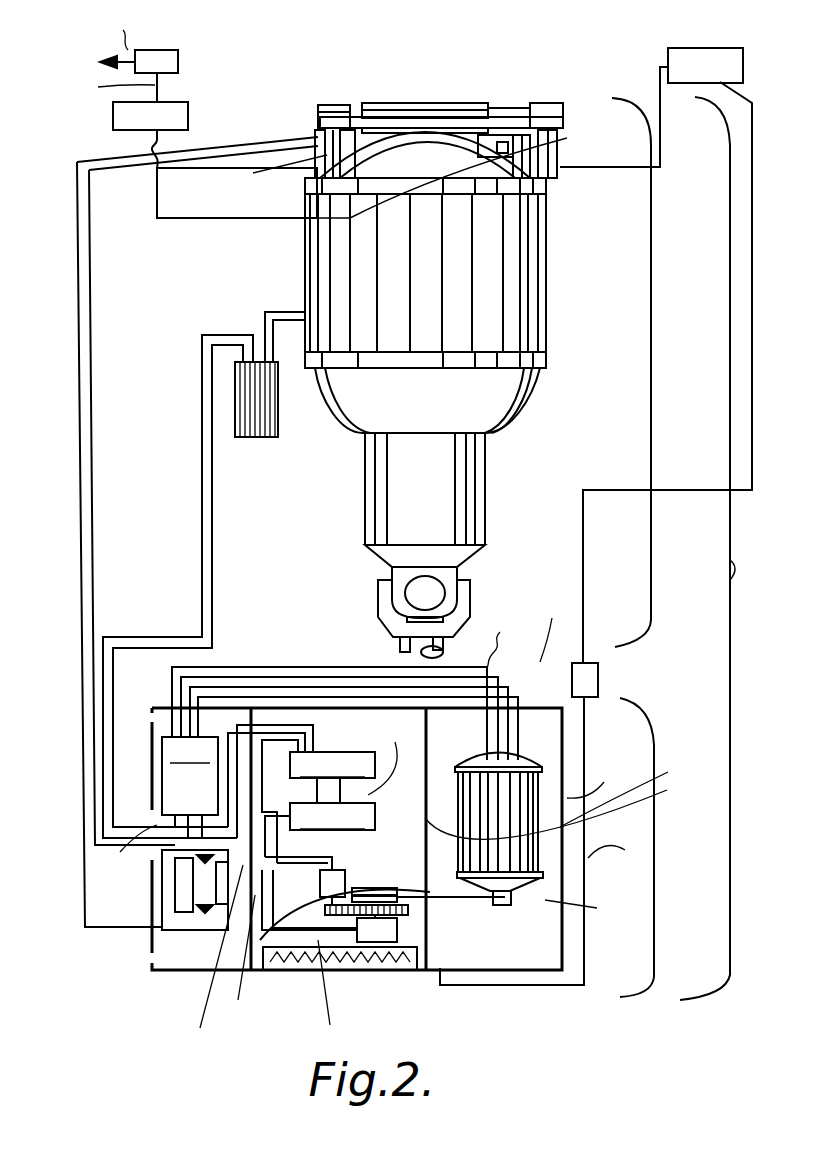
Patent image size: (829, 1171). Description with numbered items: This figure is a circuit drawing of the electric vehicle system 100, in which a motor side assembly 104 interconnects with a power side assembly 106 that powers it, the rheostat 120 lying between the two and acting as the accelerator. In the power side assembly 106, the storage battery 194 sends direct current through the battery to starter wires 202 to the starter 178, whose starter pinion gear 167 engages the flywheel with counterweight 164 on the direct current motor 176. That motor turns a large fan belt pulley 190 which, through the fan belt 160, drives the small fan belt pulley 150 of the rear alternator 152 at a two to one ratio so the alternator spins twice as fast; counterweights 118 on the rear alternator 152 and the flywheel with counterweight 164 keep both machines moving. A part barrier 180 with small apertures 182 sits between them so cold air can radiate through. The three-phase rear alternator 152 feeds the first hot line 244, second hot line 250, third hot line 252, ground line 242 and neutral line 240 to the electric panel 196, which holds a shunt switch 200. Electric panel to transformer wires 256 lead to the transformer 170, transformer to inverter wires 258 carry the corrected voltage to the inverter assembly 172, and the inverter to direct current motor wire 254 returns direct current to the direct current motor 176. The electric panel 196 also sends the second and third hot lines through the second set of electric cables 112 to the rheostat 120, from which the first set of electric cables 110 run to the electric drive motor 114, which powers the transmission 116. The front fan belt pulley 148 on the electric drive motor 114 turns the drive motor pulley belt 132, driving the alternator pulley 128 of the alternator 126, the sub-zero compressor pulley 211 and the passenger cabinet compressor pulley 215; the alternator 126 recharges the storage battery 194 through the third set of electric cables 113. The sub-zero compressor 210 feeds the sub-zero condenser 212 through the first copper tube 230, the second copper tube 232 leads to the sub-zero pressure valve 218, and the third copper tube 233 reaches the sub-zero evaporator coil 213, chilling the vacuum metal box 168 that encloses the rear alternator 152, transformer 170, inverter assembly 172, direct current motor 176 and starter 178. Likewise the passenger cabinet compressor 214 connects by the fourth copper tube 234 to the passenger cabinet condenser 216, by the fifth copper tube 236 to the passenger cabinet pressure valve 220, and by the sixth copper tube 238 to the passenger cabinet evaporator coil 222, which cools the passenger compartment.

The electric vehicle system 100 is at (769, 572).
The motor side assembly 104 is at (651, 370).
The power side assembly 106 is at (654, 845).
The first set of electric cables 110 is at (273, 313).
The second set of electric cables 112 is at (207, 423).
The third set of electric cables 113 is at (92, 302).
The electric drive motor 114 is at (310, 245).
The transmission 116 is at (372, 510).
The counterweights 118 is at (597, 908).
The rheostat 120 is at (247, 437).
The alternator 126 is at (264, 175).
The alternator pulley 128 is at (332, 105).
The drive motor pulley belt 132 is at (325, 115).
The front fan belt pulley 148 is at (390, 103).
The small fan belt pulley 150 is at (503, 905).
The rear alternator 152 is at (470, 760).
The fan belt 160 is at (526, 952).
The flywheel with counterweight 164 is at (436, 975).
The starter pinion gear 167 is at (238, 961).
The vacuum metal box 168 is at (604, 776).
The transformer 170 is at (301, 794).
The inverter assembly 172 is at (332, 805).
The direct current motor 176 is at (378, 935).
The starter 178 is at (337, 885).
The part barrier 180 is at (639, 787).
The apertures 182 is at (572, 805).
The large fan belt pulley 190 is at (432, 896).
The storage battery 194 is at (185, 908).
The electric panel 196 is at (190, 786).
The shunt switch 200 is at (210, 797).
The battery to starter wires 202 is at (202, 960).
The sub-zero compressor 210 is at (562, 155).
The sub-zero compressor pulley 211 is at (545, 103).
The sub-zero condenser 212 is at (705, 65).
The sub-zero evaporator coil 213 is at (312, 933).
The passenger cabinet compressor 214 is at (560, 137).
The passenger cabinet compressor pulley 215 is at (507, 103).
The passenger cabinet condenser 216 is at (150, 120).
The sub-zero pressure valve 218 is at (600, 680).
The passenger cabinet pressure valve 220 is at (180, 60).
The passenger cabinet evaporator coil 222 is at (88, 59).
The first copper tube 230 is at (677, 97).
The second copper tube 232 is at (748, 232).
The third copper tube 233 is at (618, 863).
The fourth copper tube 234 is at (157, 203).
The fifth copper tube 236 is at (100, 87).
The sixth copper tube 238 is at (130, 27).
The neutral line 240 is at (555, 626).
The ground line 242 is at (624, 722).
The first hot line 244 is at (503, 636).
The second hot line 250 is at (240, 687).
The third hot line 252 is at (288, 697).
The inverter to direct current motor wire 254 is at (325, 995).
The electric panel to transformer wires 256 is at (124, 854).
The transformer to inverter wires 258 is at (383, 753).